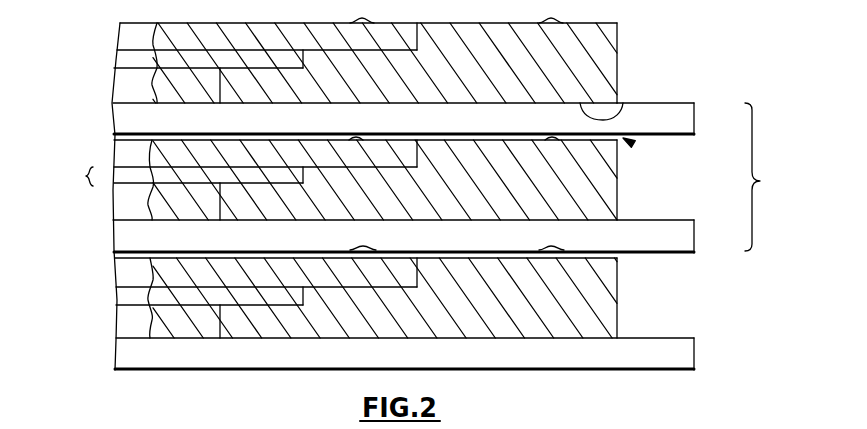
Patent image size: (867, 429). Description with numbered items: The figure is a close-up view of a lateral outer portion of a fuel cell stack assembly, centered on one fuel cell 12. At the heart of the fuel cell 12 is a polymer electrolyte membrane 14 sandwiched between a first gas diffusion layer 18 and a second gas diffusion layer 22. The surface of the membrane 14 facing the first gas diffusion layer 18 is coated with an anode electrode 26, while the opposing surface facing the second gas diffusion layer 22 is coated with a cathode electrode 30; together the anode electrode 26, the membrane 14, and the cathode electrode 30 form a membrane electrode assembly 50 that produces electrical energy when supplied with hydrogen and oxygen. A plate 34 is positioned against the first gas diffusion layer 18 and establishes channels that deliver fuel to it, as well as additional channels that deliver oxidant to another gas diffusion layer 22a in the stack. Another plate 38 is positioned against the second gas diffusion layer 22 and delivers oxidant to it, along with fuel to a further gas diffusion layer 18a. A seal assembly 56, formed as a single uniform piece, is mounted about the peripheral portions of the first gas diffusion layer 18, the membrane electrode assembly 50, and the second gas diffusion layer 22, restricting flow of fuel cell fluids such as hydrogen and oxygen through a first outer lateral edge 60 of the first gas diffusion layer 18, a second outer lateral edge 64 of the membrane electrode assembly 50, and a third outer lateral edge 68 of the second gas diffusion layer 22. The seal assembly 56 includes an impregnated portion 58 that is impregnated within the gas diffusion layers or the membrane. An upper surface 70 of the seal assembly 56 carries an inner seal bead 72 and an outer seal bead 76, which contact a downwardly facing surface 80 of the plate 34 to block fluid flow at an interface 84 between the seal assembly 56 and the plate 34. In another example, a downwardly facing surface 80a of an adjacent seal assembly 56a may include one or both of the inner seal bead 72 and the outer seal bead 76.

The fuel cell 12 is at (760, 181).
The polymer electrolyte membrane 14 is at (142, 178).
The first gas diffusion layer 18 is at (128, 155).
The gas diffusion layer 18a is at (137, 273).
The second gas diffusion layer 22 is at (142, 210).
The gas diffusion layer 22a is at (128, 85).
The anode electrode 26 is at (128, 172).
The cathode electrode 30 is at (145, 188).
The plate 34 is at (128, 117).
The plate 38 is at (143, 237).
The membrane electrode assembly 50 is at (87, 176).
The seal assembly 56 is at (603, 183).
The adjacent seal assembly 56a is at (603, 62).
The impregnated portion 58 is at (233, 157).
The first outer lateral edge 60 is at (417, 167).
The second outer lateral edge 64 is at (303, 182).
The third outer lateral edge 68 is at (225, 210).
The upper surface 70 is at (498, 134).
The inner seal bead 72 is at (357, 134).
The outer seal bead 76 is at (552, 134).
The downwardly facing surface 80 is at (673, 136).
The downwardly facing surface 80a is at (623, 103).
The interface 84 is at (633, 144).